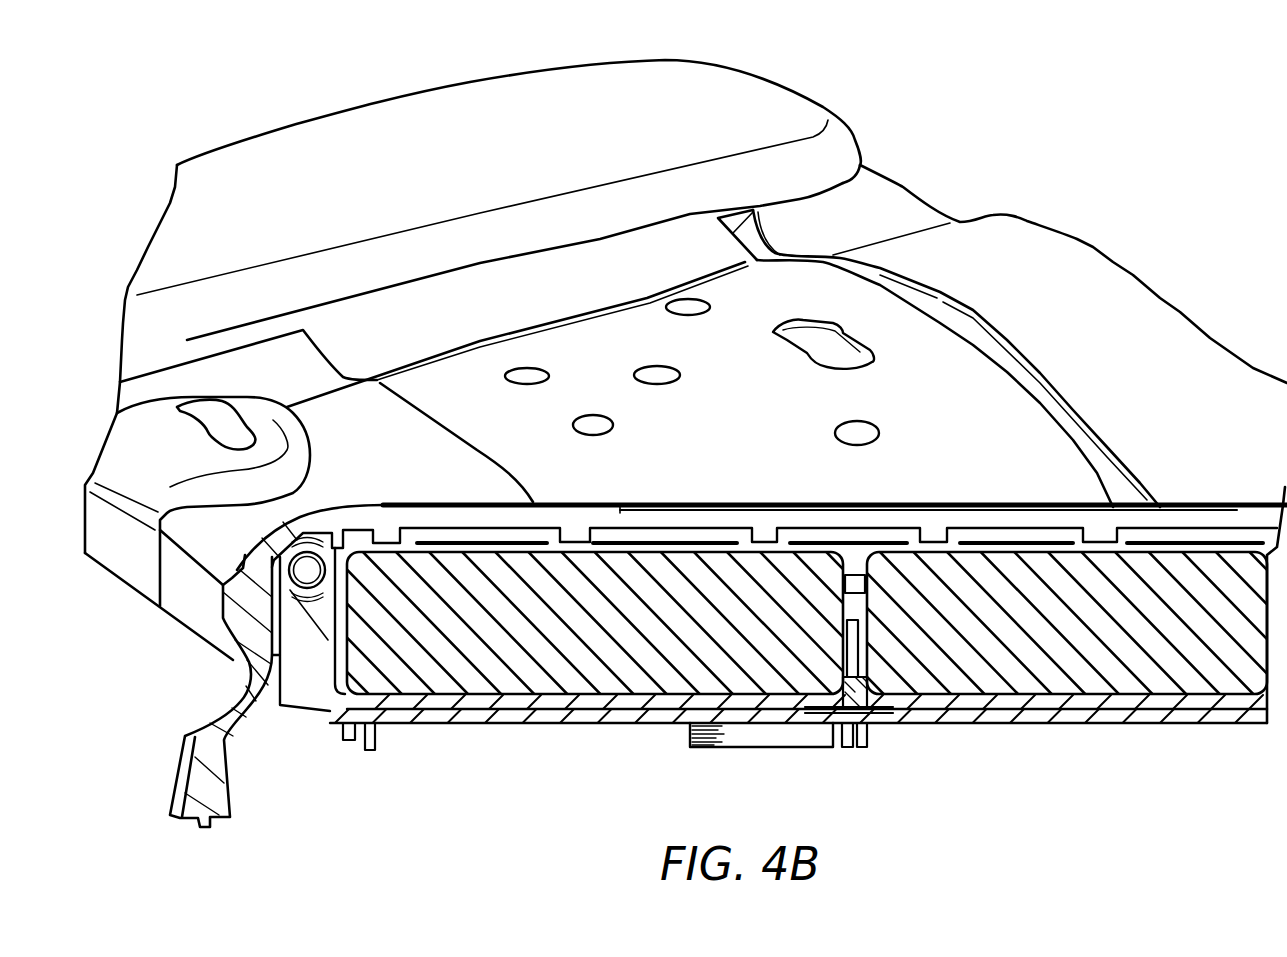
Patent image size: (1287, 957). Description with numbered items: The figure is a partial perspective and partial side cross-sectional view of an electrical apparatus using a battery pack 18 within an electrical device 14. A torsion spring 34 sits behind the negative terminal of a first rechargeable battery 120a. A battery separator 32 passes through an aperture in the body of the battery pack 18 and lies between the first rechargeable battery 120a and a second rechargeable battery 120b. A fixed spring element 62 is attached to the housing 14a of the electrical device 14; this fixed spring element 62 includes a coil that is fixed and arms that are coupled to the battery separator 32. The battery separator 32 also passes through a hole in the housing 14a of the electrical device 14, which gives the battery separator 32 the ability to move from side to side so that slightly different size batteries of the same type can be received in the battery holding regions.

The electrical device 14 is at (187, 720).
The housing 14a is at (467, 724).
The battery pack 18 is at (630, 700).
The battery separator 32 is at (862, 722).
The torsion spring 34 is at (305, 735).
The fixed spring element 62 is at (780, 747).
The first rechargeable battery 120a is at (555, 736).
The second rechargeable battery 120b is at (1123, 734).